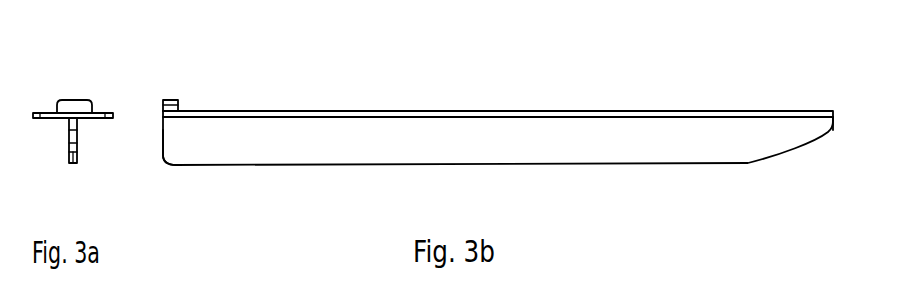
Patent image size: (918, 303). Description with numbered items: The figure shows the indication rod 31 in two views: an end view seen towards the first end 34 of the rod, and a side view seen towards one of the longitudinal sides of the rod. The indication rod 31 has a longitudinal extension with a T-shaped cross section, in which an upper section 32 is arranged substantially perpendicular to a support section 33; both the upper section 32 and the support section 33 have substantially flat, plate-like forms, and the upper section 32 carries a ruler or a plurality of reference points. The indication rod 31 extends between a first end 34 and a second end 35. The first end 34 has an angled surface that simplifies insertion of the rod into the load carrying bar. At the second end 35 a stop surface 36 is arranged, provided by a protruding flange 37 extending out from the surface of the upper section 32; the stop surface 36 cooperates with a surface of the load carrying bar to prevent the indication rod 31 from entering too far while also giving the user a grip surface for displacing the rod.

In FIG. 3a, the indication rod 31 is at (50, 98).
In FIG. 3a, the upper section 32 is at (100, 112).
In FIG. 3b, the upper section 32 is at (602, 112).
In FIG. 3a, the support section 33 is at (80, 141).
In FIG. 3b, the support section 33 is at (673, 147).
In FIG. 3b, the first end 34 is at (836, 127).
In FIG. 3b, the second end 35 is at (160, 135).
In FIG. 3a, the stop surface 36 is at (72, 101).
In FIG. 3b, the stop surface 36 is at (180, 107).
In FIG. 3b, the flange 37 is at (170, 98).